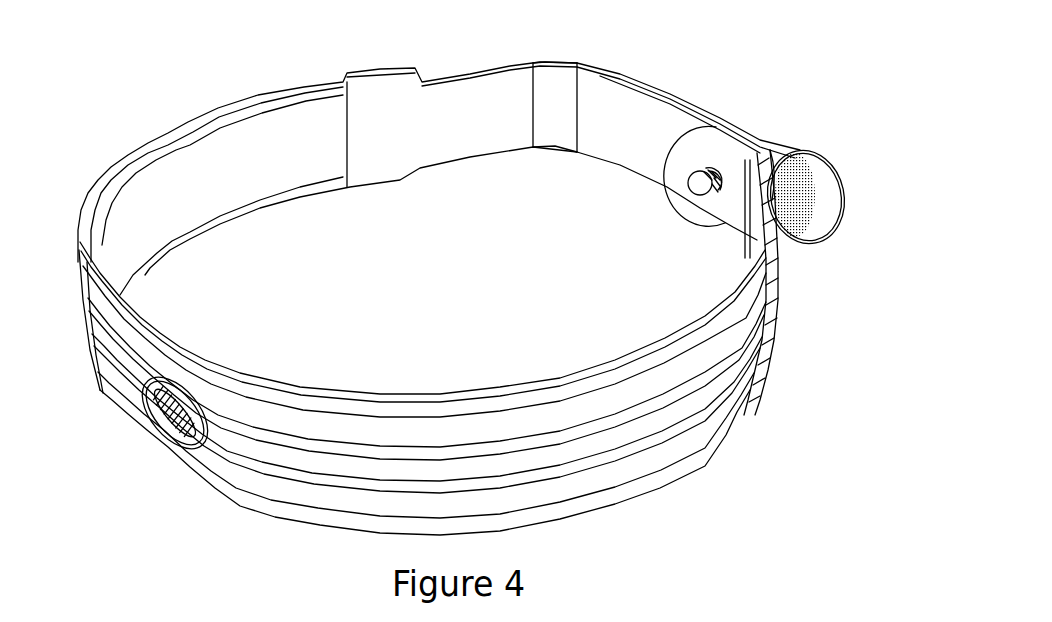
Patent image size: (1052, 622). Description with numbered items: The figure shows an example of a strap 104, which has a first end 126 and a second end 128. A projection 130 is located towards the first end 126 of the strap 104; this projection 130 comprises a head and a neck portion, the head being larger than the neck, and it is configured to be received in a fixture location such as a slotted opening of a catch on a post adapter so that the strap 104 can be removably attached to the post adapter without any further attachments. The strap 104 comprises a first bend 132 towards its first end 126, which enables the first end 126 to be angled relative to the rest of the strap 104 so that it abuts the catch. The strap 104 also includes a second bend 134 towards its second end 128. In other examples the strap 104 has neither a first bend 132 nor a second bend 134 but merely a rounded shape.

The strap 104 is at (130, 97).
The first end 126 is at (732, 232).
The second end 128 is at (838, 220).
The projection 130 is at (712, 168).
The first bend 132 is at (767, 160).
The second bend 134 is at (560, 63).